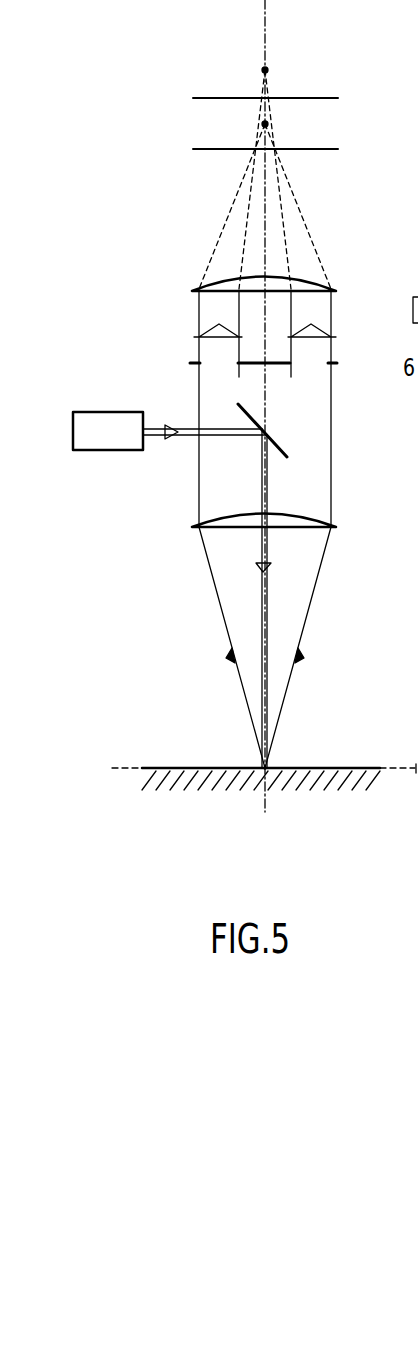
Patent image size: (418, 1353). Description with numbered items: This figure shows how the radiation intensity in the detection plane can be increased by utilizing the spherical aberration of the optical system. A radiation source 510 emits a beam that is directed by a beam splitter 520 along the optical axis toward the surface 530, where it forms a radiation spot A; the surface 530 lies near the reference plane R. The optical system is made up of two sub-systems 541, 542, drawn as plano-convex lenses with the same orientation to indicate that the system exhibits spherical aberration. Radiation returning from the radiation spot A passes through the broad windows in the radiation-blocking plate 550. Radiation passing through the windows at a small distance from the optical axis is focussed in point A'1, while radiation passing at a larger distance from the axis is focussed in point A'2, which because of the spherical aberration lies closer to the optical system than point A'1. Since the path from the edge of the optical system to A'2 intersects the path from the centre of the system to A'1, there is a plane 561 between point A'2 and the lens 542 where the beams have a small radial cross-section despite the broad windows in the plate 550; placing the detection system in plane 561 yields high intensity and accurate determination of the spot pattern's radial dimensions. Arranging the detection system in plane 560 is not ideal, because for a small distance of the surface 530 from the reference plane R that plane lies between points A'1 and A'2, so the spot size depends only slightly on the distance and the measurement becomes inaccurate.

The laser light source 510 is at (128, 451).
The beam splitter 520 is at (298, 447).
The surface 530 is at (360, 767).
The optical system sub-system 541 is at (308, 521).
The optical system sub-system 542 is at (312, 284).
The radiation-blocking plate 550 is at (336, 362).
The plane 560 is at (338, 98).
The plane 561 is at (338, 150).
The radiation spot A is at (281, 750).
The point A'1 is at (284, 72).
The point A'2 is at (286, 128).
The reference plane R is at (256, 768).